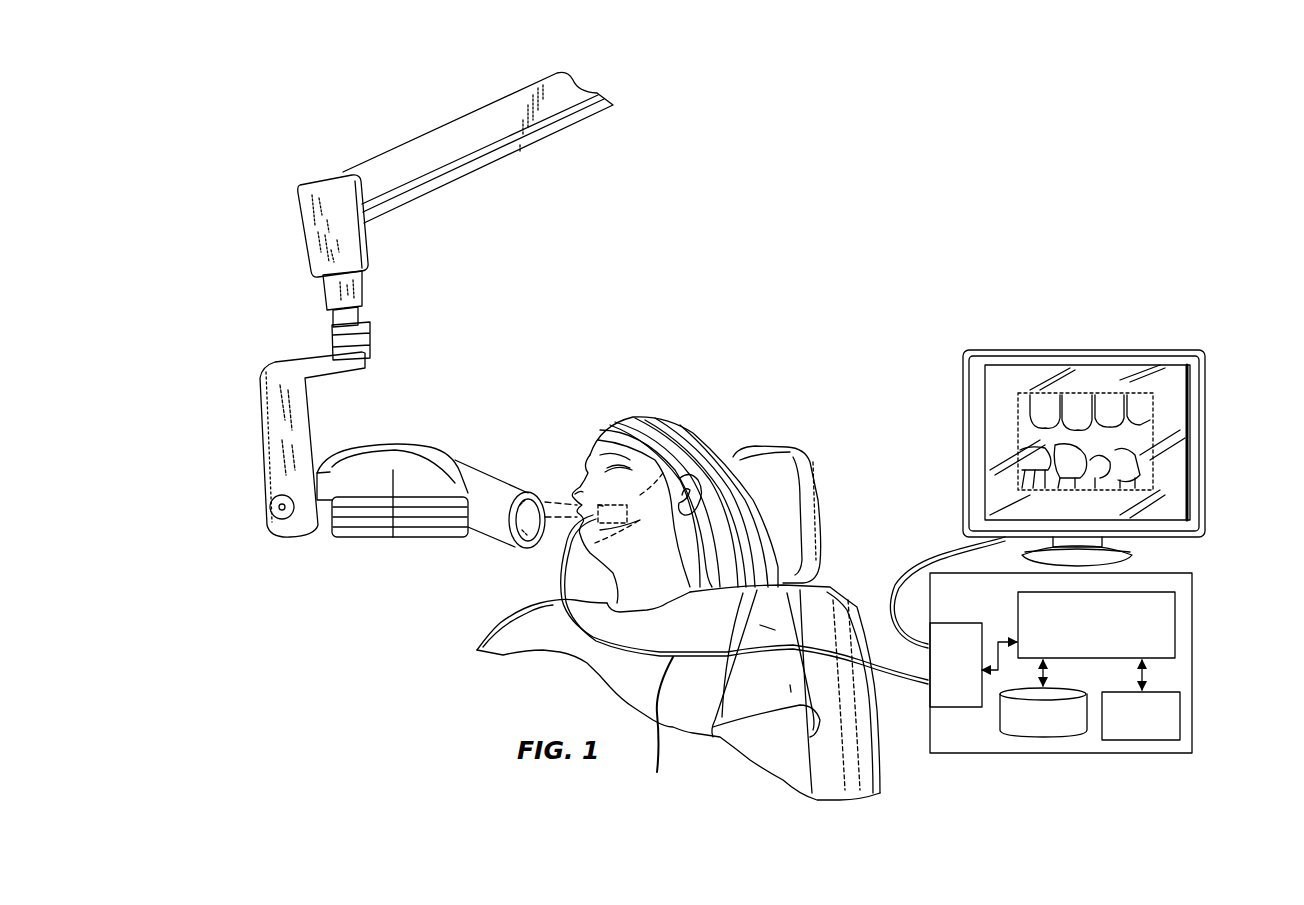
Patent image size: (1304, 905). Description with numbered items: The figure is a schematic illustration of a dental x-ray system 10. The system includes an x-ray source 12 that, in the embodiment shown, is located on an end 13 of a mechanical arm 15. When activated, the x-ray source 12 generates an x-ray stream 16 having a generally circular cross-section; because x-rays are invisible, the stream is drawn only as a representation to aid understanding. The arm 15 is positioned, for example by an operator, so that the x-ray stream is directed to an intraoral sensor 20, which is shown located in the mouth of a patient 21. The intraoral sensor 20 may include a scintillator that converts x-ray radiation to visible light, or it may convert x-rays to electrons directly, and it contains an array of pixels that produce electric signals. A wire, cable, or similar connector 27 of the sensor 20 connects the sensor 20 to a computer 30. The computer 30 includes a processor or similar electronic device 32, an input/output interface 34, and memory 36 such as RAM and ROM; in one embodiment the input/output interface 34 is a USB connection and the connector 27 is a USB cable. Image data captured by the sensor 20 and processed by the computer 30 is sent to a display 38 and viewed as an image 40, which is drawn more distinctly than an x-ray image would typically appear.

The dental x-ray system 10 is at (818, 220).
The x-ray source 12 is at (447, 437).
The end 13 is at (303, 538).
The mechanical arm 15 is at (477, 170).
The x-ray stream 16 is at (543, 548).
The intraoral sensor 20 is at (688, 427).
The patient 21 is at (702, 560).
The connector 27 is at (657, 730).
The computer 30 is at (1100, 691).
The processor 32 is at (1175, 607).
The input/output interface 34 is at (957, 707).
The memory 36 is at (1053, 737).
The display 38 is at (1071, 466).
The image 40 is at (1160, 410).